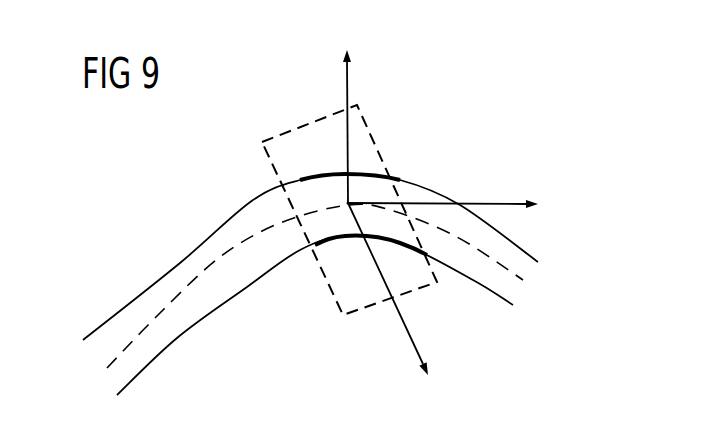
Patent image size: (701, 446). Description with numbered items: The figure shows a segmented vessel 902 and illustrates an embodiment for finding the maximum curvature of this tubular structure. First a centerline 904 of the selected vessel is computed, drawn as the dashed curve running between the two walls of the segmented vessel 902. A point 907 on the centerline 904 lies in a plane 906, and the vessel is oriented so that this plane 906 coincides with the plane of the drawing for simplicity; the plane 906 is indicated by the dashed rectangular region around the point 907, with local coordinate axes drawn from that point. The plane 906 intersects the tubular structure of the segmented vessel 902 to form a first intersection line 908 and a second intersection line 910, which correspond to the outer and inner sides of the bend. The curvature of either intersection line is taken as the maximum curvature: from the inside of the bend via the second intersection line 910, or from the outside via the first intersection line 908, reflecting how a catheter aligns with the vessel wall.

The segmented vessel 902 is at (180, 277).
The centerline 904 is at (122, 352).
The plane 906 is at (297, 163).
The point 907 is at (350, 202).
The first intersection line 908 is at (323, 177).
The second intersection line 910 is at (403, 243).